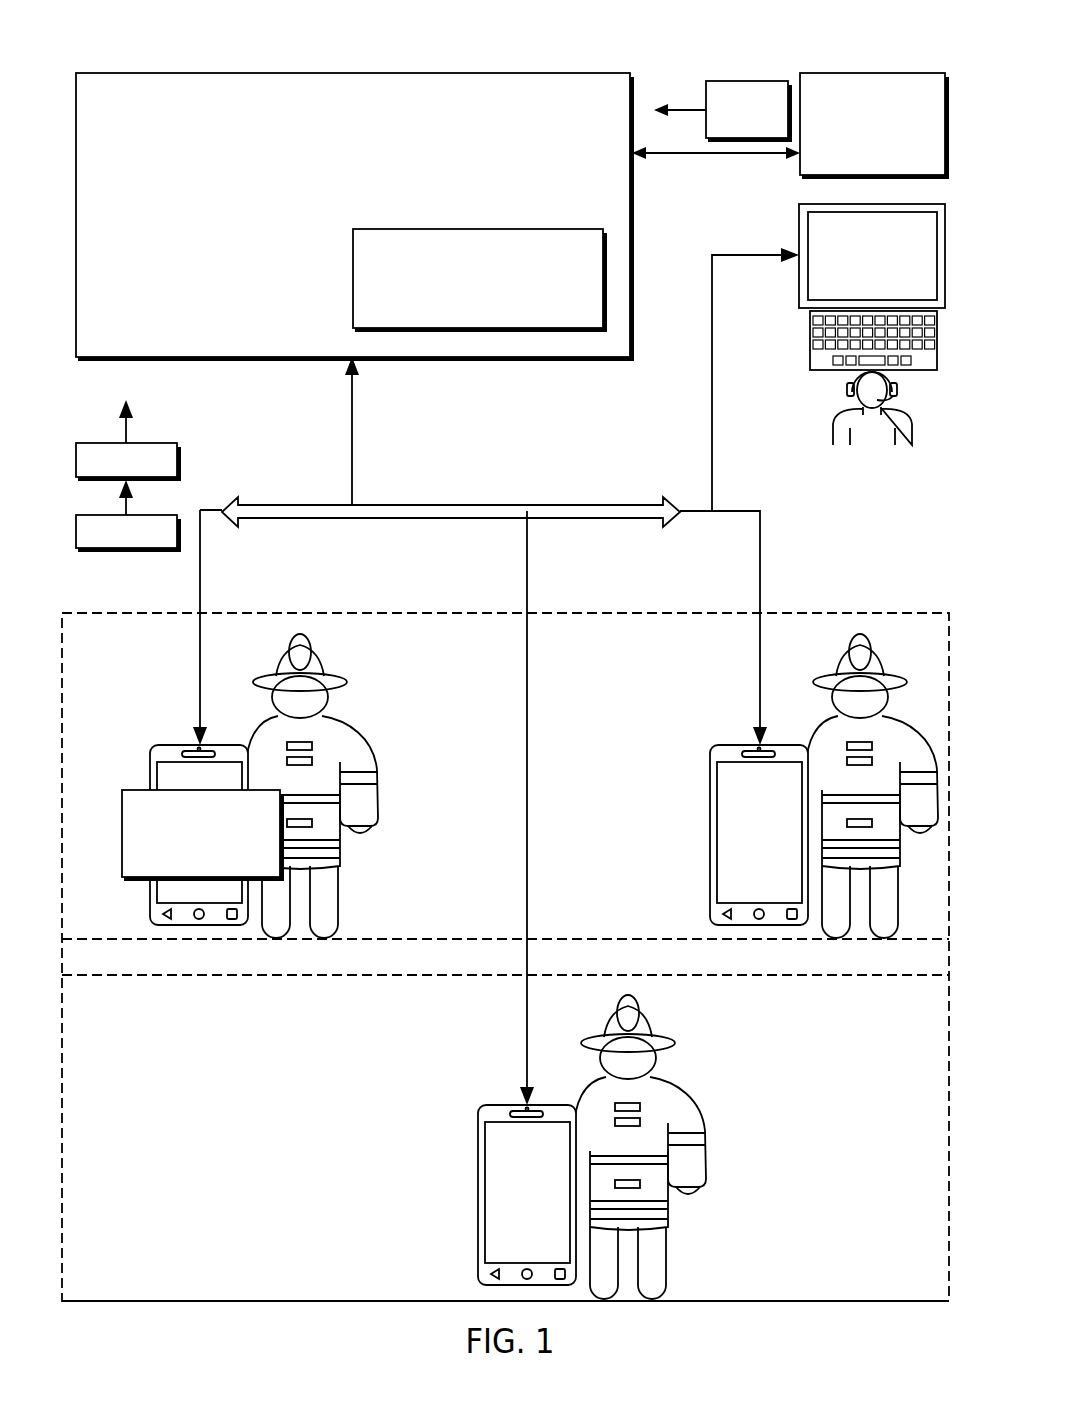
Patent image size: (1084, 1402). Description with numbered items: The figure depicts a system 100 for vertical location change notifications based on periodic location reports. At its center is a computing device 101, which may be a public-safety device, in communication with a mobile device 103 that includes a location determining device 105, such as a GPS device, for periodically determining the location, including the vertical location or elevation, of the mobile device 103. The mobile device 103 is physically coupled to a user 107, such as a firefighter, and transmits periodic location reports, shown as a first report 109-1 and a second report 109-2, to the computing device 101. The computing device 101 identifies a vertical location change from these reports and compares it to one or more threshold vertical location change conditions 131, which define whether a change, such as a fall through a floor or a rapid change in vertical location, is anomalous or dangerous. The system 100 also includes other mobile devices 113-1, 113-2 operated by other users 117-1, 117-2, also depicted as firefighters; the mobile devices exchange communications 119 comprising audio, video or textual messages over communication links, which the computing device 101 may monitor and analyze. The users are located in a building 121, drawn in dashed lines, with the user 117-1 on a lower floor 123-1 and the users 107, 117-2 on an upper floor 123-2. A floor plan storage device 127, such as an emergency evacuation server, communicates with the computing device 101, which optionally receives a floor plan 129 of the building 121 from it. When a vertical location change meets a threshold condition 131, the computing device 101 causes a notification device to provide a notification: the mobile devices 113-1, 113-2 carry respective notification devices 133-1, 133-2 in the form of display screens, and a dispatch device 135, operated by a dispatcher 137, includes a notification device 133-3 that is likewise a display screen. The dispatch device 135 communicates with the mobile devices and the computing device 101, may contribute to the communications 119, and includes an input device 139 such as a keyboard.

The system 100 is at (122, 12).
The computing device 101 is at (351, 72).
The threshold vertical location change condition 131 is at (477, 228).
The floor plan 129 is at (748, 80).
The floor plan storage device 127 is at (871, 72).
The notification device 133-3 is at (799, 228).
The dispatch device 135 is at (798, 318).
The input device 139 is at (818, 355).
The dispatcher 137 is at (868, 447).
The first report 109-1 is at (91, 443).
The second report 109-2 is at (126, 550).
The communications 119 is at (480, 504).
The building 121 is at (830, 612).
The lower floor 123-1 is at (815, 1300).
The upper floor 123-2 is at (238, 977).
The mobile device 103 is at (150, 766).
The location determining device 105 is at (178, 788).
The user 107 is at (360, 740).
The user 117-1 is at (686, 1100).
The user 117-2 is at (832, 713).
The mobile device 113-1 is at (478, 1158).
The mobile device 113-2 is at (710, 796).
The notification device 133-1 is at (505, 1218).
The notification device 133-2 is at (736, 855).